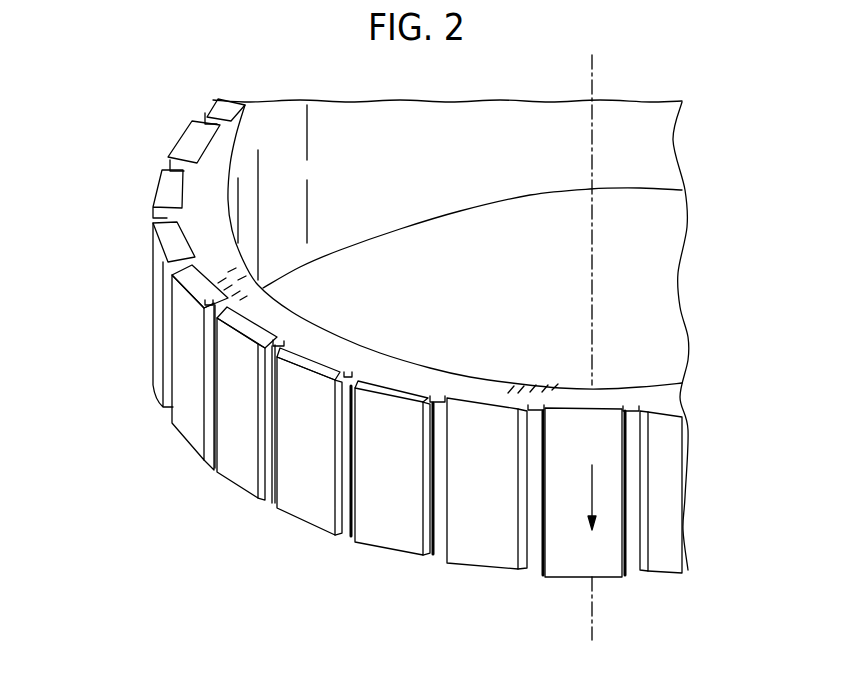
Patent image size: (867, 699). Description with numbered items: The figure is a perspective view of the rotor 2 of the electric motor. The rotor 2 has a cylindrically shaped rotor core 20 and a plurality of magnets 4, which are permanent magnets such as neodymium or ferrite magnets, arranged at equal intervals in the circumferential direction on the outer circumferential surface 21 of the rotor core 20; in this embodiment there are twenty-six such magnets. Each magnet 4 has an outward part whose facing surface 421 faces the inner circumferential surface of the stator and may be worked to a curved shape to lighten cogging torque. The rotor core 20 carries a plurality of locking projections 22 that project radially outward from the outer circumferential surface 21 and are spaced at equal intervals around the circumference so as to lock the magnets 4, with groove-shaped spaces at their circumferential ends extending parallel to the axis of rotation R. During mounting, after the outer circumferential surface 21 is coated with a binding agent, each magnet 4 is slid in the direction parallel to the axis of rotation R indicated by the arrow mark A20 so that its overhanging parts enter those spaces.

The rotor 2 is at (95, 86).
The rotor core 20 is at (542, 163).
The outer circumferential surface 21 is at (317, 360).
The locking projection 22 is at (348, 525).
The magnet 4 is at (474, 498).
The facing surface 421 is at (300, 507).
The arrow mark A20 is at (600, 493).
The axis of rotation R is at (592, 52).